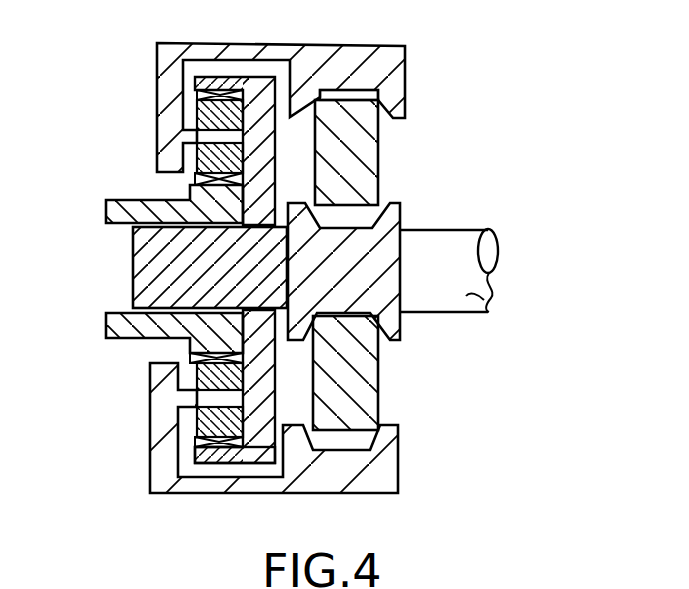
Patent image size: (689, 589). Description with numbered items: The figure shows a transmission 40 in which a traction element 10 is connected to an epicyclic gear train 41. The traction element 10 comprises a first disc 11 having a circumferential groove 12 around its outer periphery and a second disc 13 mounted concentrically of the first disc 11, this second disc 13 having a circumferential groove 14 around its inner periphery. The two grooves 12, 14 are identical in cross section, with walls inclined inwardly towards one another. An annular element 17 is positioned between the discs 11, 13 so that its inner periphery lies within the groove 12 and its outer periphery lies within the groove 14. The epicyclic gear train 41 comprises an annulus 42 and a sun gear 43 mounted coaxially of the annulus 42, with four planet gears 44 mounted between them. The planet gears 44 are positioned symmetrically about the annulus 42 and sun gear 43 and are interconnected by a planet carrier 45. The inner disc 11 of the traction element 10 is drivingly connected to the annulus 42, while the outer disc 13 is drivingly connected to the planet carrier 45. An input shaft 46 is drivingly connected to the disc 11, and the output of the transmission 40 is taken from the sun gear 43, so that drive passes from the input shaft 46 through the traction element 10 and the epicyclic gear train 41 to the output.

The traction element 10 is at (289, 236).
The first disc 11 is at (390, 238).
The circumferential groove 12 is at (362, 218).
The second disc 13 is at (397, 70).
The circumferential groove 14 is at (350, 93).
The annular element 17 is at (358, 388).
The transmission 40 is at (300, 430).
The epicyclic gear train 41 is at (113, 412).
The annulus 42 is at (195, 455).
The sun gear 43 is at (125, 210).
The planet gears 44 is at (203, 112).
The planet carrier 45 is at (167, 82).
The input shaft 46 is at (490, 297).